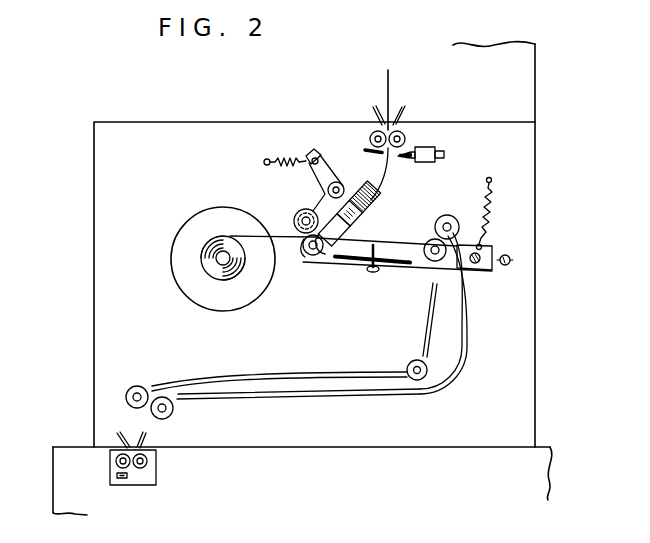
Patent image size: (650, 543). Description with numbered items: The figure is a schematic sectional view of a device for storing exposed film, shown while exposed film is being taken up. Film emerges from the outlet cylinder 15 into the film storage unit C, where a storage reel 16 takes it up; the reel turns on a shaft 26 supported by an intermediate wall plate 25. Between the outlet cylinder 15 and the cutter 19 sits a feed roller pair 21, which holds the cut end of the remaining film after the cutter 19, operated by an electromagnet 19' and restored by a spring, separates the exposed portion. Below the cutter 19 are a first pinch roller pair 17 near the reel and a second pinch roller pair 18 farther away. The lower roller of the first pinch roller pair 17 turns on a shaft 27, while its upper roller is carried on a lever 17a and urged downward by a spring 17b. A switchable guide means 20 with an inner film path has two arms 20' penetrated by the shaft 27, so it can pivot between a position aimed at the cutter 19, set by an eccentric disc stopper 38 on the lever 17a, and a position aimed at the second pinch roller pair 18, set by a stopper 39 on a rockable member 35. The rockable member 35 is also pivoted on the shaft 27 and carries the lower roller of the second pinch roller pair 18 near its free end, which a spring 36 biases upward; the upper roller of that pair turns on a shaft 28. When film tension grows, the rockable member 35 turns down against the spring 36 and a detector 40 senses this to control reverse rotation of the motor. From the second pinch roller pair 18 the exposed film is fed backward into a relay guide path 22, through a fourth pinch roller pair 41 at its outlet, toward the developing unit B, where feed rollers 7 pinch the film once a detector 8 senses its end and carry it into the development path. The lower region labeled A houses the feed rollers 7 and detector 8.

The feed rollers 7 is at (156, 463).
The detector 8 is at (122, 479).
The outlet cylinder 15 is at (373, 115).
The storage reel 16 is at (213, 216).
The first pinch roller pair 17 is at (292, 211).
The lever 17a is at (315, 155).
The spring 17b is at (288, 160).
The second pinch roller pair 18 is at (445, 270).
The cutter 19 is at (416, 177).
The electromagnet 19' is at (450, 144).
The switchable guide means 20 is at (376, 190).
The arms 20' is at (329, 270).
The feed roller pair 21 is at (400, 130).
The relay guide path 22 is at (333, 394).
The intermediate wall plate 25 is at (115, 164).
The shaft 26 is at (222, 262).
The shaft 27 is at (310, 256).
The shaft 28 is at (447, 216).
The rockable member 35 is at (398, 266).
The spring 36 is at (489, 208).
The stopper 38 is at (351, 182).
The stopper 39 is at (372, 273).
The detector 40 is at (482, 265).
The fourth pinch roller pair 41 is at (180, 411).
The lower unit A is at (66, 443).
The developing unit B is at (541, 82).
The film storage unit C is at (90, 261).